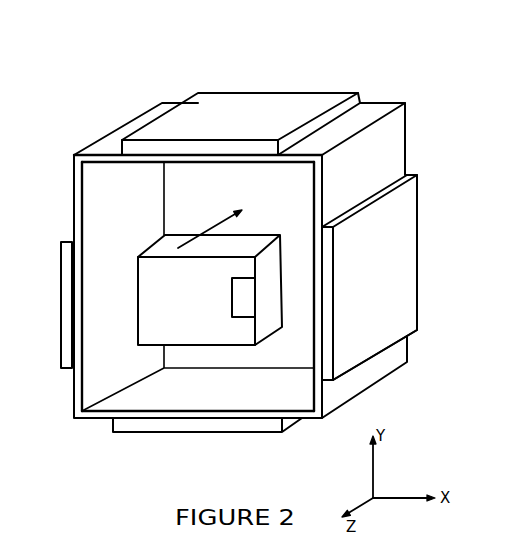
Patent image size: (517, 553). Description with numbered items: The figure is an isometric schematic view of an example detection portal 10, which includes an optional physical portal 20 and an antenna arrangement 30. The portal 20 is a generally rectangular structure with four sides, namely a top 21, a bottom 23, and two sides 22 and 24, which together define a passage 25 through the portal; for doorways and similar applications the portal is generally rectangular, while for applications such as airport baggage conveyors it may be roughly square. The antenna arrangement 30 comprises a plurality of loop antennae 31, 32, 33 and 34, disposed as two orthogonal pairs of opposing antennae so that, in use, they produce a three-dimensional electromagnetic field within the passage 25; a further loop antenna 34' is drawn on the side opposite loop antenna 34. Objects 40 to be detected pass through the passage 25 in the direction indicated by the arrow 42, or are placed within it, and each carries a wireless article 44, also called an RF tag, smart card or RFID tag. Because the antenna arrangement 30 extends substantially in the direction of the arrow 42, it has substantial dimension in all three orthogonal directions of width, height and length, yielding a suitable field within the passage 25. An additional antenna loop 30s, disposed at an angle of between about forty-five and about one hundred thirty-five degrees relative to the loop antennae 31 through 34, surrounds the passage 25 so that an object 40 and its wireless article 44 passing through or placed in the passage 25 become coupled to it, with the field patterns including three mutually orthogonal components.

The detection portal 10 is at (107, 96).
The physical portal 20 is at (415, 119).
The top 21 is at (375, 104).
The side 22 is at (396, 361).
The bottom 23 is at (313, 419).
The side 24 is at (73, 403).
The passage 25 is at (297, 189).
The antenna arrangement 30 is at (254, 84).
The additional antenna loop 30s is at (138, 162).
The loop antenna 31 is at (298, 93).
The loop antenna 32 is at (408, 223).
The loop antenna 33 is at (200, 429).
The loop antenna 34 is at (54, 287).
The right side panel (opposite) 34' is at (465, 253).
The object 40 is at (266, 333).
The arrow 42 is at (217, 223).
The wireless article 44 is at (256, 300).